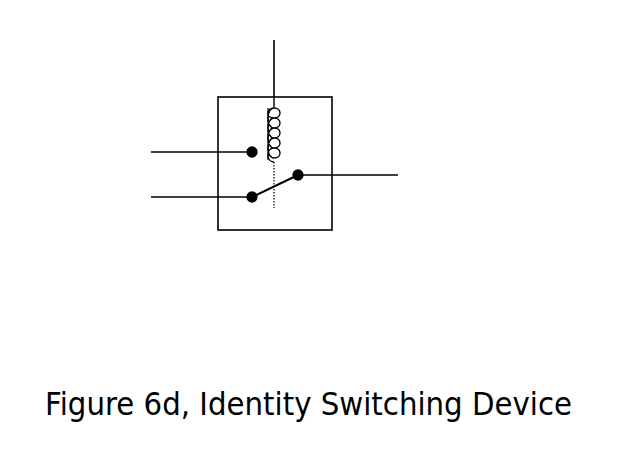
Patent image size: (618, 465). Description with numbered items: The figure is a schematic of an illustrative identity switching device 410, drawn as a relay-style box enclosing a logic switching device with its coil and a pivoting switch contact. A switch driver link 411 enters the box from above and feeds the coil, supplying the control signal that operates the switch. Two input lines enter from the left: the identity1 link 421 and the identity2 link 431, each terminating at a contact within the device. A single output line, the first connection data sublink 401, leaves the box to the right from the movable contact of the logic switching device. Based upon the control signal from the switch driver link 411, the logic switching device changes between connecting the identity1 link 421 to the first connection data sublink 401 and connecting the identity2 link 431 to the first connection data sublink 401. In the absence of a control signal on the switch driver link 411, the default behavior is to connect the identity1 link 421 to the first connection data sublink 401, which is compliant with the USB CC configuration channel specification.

The identity switching device 410 is at (179, 60).
The switch driver link 411 is at (274, 67).
The first connection data sublink 401 is at (342, 173).
The identity1 link 421 is at (196, 197).
The identity2 link 431 is at (175, 152).